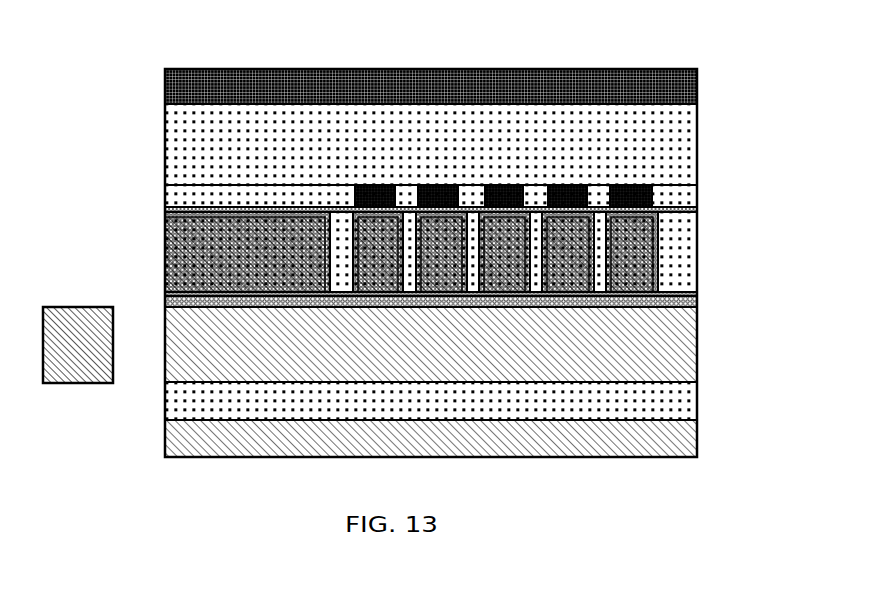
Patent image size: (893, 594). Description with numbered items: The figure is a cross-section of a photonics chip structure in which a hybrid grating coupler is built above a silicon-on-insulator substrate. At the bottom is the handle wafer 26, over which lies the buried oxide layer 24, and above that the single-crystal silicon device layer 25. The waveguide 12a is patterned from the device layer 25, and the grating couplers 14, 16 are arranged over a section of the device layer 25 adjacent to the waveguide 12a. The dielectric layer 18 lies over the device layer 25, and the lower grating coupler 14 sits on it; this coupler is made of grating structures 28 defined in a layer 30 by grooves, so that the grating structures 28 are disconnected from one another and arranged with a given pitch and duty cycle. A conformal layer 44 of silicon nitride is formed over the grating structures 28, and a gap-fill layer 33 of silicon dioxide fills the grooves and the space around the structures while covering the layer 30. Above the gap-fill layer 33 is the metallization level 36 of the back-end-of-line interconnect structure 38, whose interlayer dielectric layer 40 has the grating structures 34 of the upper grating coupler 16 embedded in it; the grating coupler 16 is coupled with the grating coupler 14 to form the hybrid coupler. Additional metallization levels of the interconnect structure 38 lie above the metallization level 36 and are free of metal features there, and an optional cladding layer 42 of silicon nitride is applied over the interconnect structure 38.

The waveguide 12a is at (84, 358).
The grating coupler 14 is at (672, 234).
The grating coupler 16 is at (670, 168).
The dielectric layer 18 is at (697, 301).
The buried oxide layer 24 is at (680, 408).
The device layer 25 is at (678, 362).
The handle wafer 26 is at (680, 444).
The grating structures 28 is at (572, 252).
The layer 30 is at (158, 261).
The gap-fill layer 33 is at (682, 240).
The grating structures 34 is at (449, 187).
The metallization level 36 is at (158, 196).
The interconnect structure 38 is at (110, 146).
The interlayer dielectric layer 40 is at (672, 200).
The cladding layer 42 is at (165, 93).
The conformal layer 44 is at (690, 294).